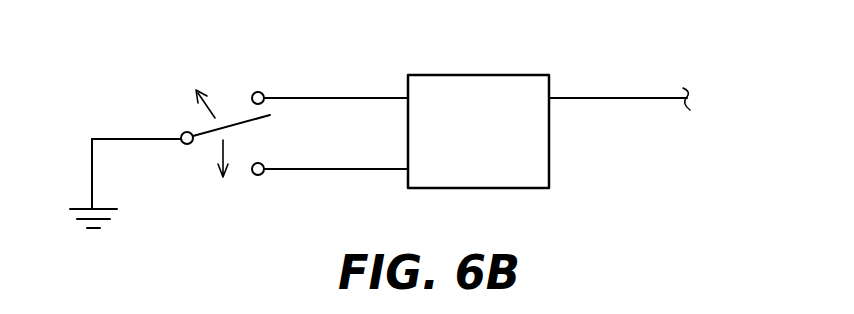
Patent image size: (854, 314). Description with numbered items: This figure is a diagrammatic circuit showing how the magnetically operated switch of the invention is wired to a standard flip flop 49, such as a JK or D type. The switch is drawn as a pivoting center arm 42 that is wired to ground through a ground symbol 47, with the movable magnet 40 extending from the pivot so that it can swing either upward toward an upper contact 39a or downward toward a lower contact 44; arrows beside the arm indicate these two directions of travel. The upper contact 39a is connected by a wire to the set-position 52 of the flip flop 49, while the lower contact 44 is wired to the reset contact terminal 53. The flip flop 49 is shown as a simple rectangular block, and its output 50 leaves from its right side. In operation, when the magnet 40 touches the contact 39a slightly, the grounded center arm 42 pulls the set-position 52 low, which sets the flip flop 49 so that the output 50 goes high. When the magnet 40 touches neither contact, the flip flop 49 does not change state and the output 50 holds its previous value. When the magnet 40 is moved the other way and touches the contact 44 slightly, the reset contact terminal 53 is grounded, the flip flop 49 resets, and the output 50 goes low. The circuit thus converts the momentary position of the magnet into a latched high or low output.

The contact 39a is at (264, 70).
The magnet 40 is at (238, 122).
The center arm 42 is at (185, 133).
The contact 44 is at (258, 176).
The ground 47 is at (110, 218).
The flip flop 49 is at (438, 98).
The output 50 is at (597, 97).
The set-position 52 is at (372, 97).
The reset contact terminal 53 is at (366, 166).